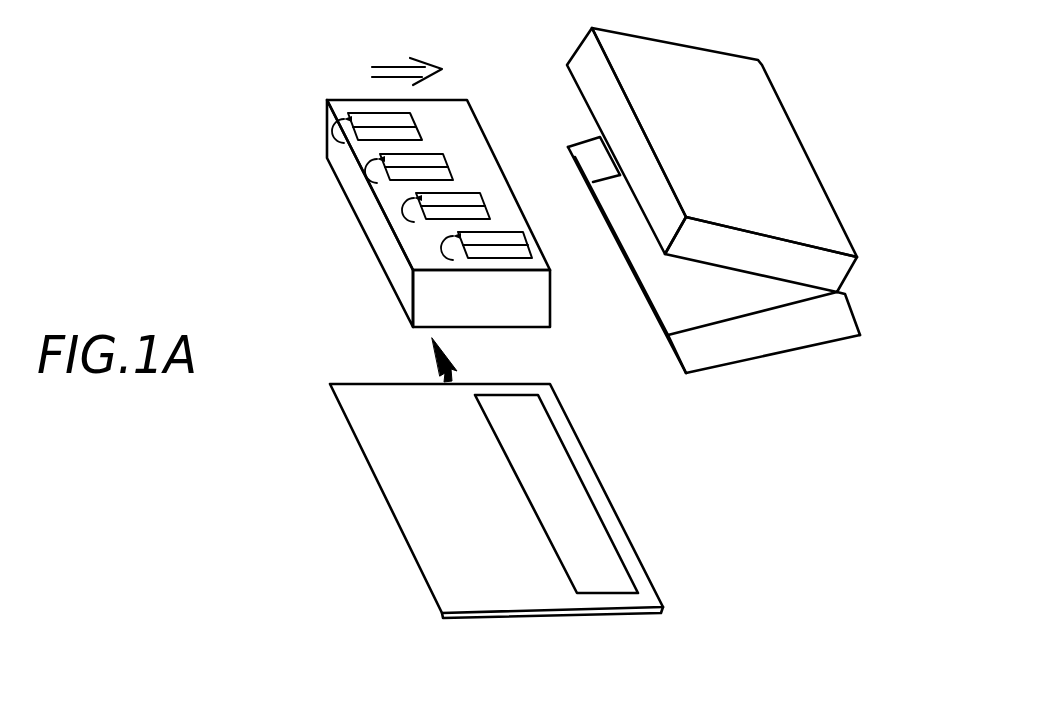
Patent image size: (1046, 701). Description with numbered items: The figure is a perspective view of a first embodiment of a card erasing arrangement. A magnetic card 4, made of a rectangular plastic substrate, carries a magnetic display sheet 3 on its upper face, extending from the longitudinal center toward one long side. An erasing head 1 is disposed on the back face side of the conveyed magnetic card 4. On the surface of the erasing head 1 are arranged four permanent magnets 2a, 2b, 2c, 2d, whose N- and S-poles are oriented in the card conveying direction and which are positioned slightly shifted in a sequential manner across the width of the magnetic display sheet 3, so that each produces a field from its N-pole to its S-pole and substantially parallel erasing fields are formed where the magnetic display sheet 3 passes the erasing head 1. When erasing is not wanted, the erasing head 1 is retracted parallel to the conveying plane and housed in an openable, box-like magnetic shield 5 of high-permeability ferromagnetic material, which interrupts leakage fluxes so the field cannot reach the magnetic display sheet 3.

The erasing head 1 is at (424, 213).
The permanent magnet 2a is at (393, 128).
The permanent magnet 2b is at (427, 168).
The permanent magnet 2c is at (460, 207).
The permanent magnet 2d is at (510, 246).
The magnetic display sheet 3 is at (556, 494).
The magnetic card 4 is at (481, 501).
The magnetic shield 5 is at (716, 200).